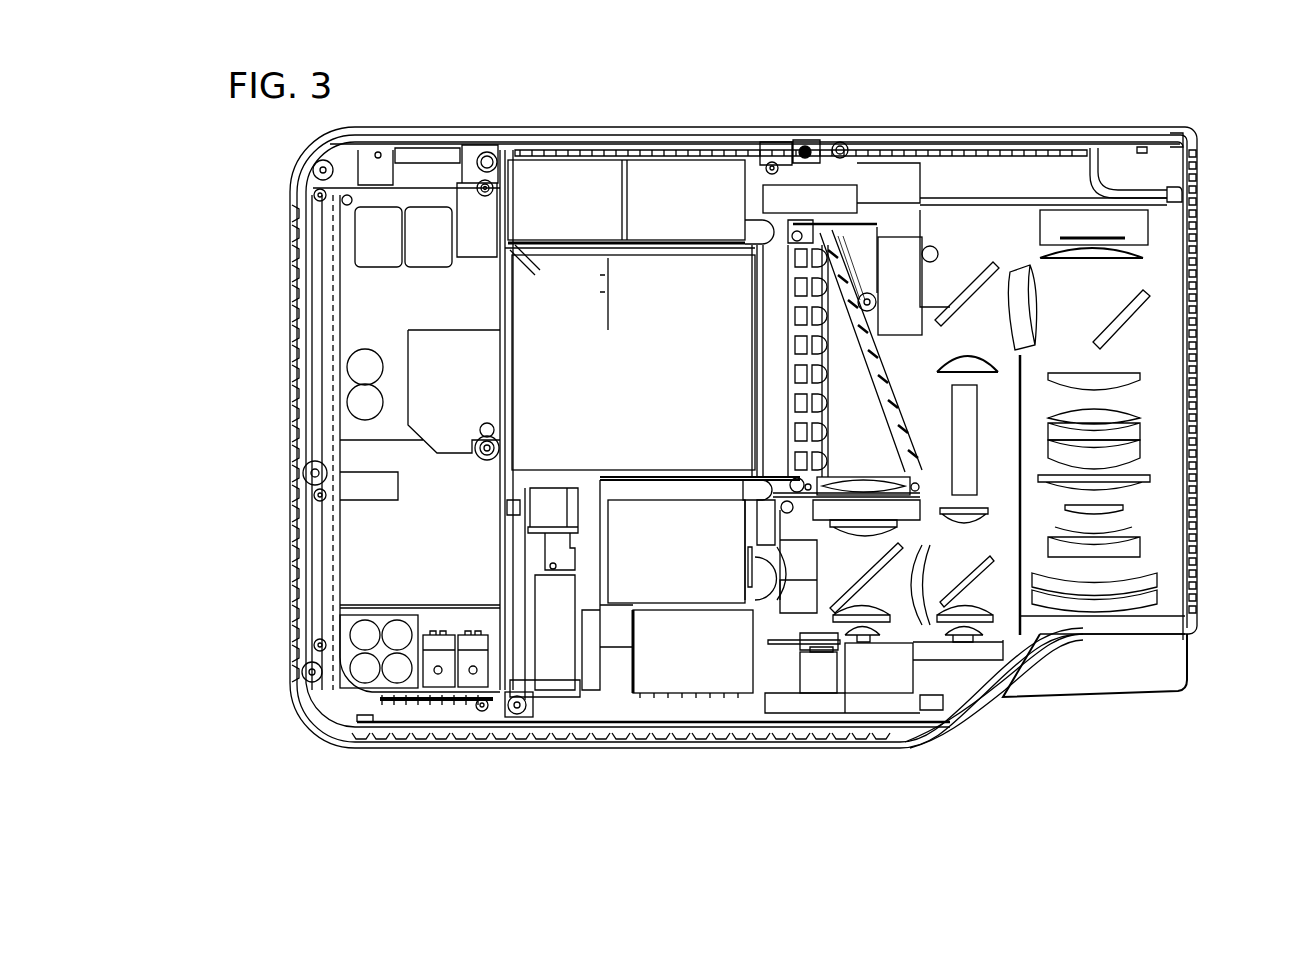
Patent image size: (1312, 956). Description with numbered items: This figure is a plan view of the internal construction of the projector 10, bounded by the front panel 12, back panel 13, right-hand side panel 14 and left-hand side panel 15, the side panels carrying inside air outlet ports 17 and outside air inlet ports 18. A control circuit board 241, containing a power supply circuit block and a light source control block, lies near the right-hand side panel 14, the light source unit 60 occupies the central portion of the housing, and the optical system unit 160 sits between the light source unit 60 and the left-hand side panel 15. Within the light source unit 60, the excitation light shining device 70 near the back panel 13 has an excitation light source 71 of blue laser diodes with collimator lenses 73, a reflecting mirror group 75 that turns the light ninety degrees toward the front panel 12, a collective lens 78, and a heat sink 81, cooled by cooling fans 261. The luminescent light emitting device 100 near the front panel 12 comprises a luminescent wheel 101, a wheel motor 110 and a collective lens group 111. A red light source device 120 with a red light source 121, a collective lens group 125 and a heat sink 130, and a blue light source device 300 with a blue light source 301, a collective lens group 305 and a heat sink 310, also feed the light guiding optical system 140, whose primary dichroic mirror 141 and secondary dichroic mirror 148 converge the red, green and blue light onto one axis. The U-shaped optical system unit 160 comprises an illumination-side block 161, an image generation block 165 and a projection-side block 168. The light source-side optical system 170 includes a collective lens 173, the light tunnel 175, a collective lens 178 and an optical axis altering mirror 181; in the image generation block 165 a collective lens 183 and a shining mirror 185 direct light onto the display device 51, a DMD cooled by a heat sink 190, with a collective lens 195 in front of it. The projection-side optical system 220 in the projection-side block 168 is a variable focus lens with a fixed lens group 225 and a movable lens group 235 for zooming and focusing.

The projector 10 is at (1210, 118).
The front panel 12 is at (432, 727).
The back panel 13 is at (621, 142).
The right-hand side panel 14 is at (300, 318).
The left-hand side panel 15 is at (1198, 584).
The inside air outlet ports 17 is at (300, 350).
The outside air inlet ports 18 is at (580, 134).
The display device 51 is at (1133, 235).
The light source unit 60 is at (740, 407).
The excitation light shining device 70 is at (780, 256).
The excitation light source 71 is at (795, 345).
The collimator lenses 73 is at (795, 315).
The reflecting mirror group 75 is at (855, 372).
The collective lens 78 is at (855, 485).
The heat sink 81 is at (662, 330).
The luminescent light emitting device 100 is at (817, 695).
The luminescent wheel 101 is at (740, 613).
The wheel motor 110 is at (790, 645).
The collective lens group 111 is at (890, 634).
The red light source device 120 is at (673, 662).
The red light source 121 is at (745, 580).
The collective lens group 125 is at (763, 545).
The heat sink 130 is at (640, 556).
The light guiding optical system 140 is at (1080, 642).
The primary dichroic mirror 141 is at (832, 606).
The secondary dichroic mirror 148 is at (941, 602).
The optical system unit 160 is at (1128, 636).
The illumination-side block 161 is at (1003, 322).
The image generation block 165 is at (1140, 276).
The projection-side block 168 is at (1155, 426).
The light source-side optical system 170 is at (988, 333).
The collective lens 173 is at (967, 520).
The light tunnel 175 is at (967, 482).
The collective lens 178 is at (1000, 358).
The optical axis altering mirror 181 is at (980, 262).
The collective lens 183 is at (1035, 290).
The shining mirror 185 is at (1120, 320).
The heat sink 190 is at (1063, 172).
The collective lens 195 is at (1120, 248).
The projection-side optical system 220 is at (1155, 452).
The fixed lens group 225 is at (1185, 672).
The movable lens group 235 is at (1152, 403).
The control circuit board 241 is at (395, 510).
The cooling fan 261 is at (530, 190).
The blue light source device 300 is at (967, 688).
The blue light source 301 is at (1010, 655).
The collective lens group 305 is at (980, 600).
The heat sink 310 is at (868, 670).